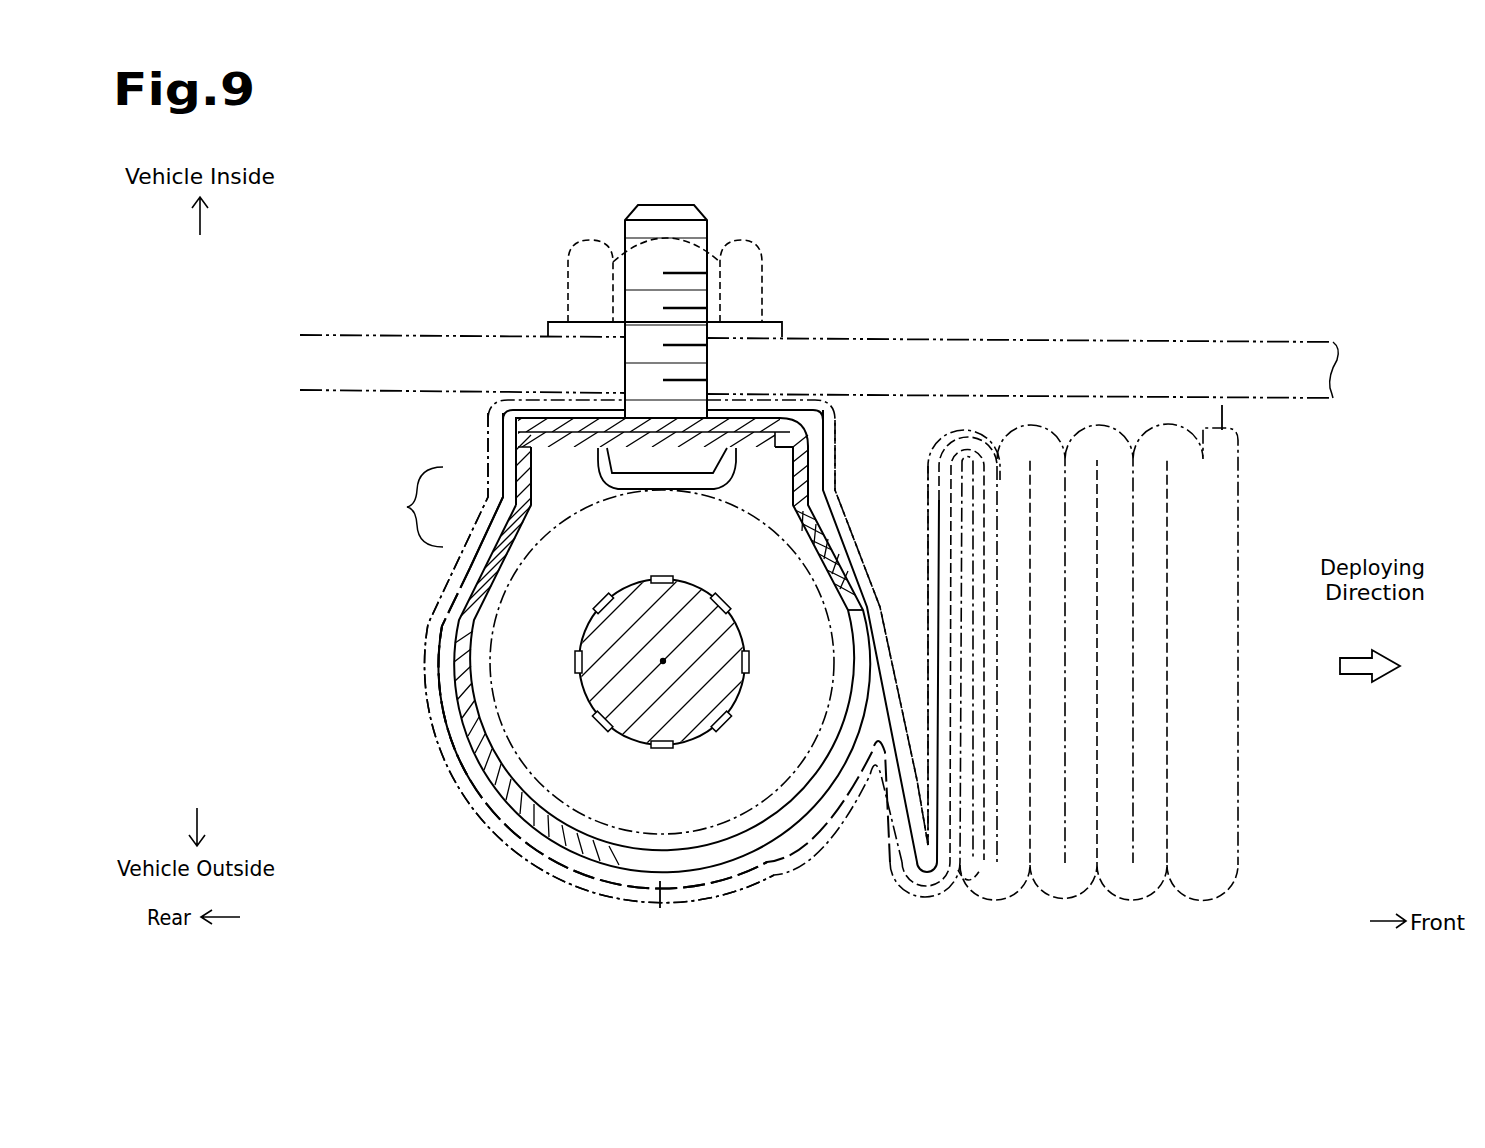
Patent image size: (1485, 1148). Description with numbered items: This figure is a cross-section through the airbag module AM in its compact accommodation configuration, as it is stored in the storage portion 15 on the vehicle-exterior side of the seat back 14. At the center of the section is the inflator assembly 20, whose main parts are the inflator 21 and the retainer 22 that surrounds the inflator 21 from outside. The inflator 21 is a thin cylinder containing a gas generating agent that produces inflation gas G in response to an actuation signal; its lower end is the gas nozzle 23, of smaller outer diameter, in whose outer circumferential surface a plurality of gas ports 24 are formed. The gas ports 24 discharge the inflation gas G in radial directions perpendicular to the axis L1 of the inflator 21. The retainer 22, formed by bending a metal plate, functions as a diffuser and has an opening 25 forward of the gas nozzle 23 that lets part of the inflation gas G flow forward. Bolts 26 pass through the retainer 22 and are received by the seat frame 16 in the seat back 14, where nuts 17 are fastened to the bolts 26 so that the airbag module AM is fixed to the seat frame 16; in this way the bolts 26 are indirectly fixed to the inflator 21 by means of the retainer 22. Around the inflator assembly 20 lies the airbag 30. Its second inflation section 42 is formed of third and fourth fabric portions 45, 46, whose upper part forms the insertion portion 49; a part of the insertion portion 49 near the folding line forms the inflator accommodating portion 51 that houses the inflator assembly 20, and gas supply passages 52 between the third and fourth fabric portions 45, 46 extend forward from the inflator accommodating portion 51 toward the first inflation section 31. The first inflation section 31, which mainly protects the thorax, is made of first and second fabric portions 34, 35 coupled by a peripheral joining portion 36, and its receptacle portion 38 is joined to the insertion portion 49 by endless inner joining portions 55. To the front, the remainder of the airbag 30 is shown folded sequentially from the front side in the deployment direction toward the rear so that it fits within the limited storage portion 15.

The seat back 14 is at (1107, 307).
The storage portion 15 is at (1361, 640).
The seat frame 16 is at (405, 335).
The nuts 17 is at (765, 284).
The inflator assembly 20 is at (402, 507).
The inflator 21 is at (525, 551).
The retainer 22 is at (524, 476).
The gas nozzle 23 is at (700, 590).
The gas ports 24 is at (660, 576).
The opening 25 is at (862, 612).
The bolts 26 is at (700, 226).
The airbag 30 is at (1240, 600).
The first inflation section 31 is at (432, 600).
The first fabric portion 34 is at (782, 878).
The second fabric portion 35 is at (878, 550).
The peripheral joining portion 36 is at (1226, 427).
The receptacle portion 38 is at (559, 658).
The second inflation section 42 is at (442, 658).
The third fabric portion 45 is at (929, 478).
The fourth fabric portion 46 is at (935, 437).
The insertion portion 49 is at (556, 651).
The inflator accommodating portion 51 is at (457, 756).
The gas supply passages 52 is at (977, 850).
The inner joining portions 55 is at (737, 410).
The axis of the inflator L1 is at (665, 663).
The inflation gas G is at (560, 569).
The airbag module AM is at (362, 748).